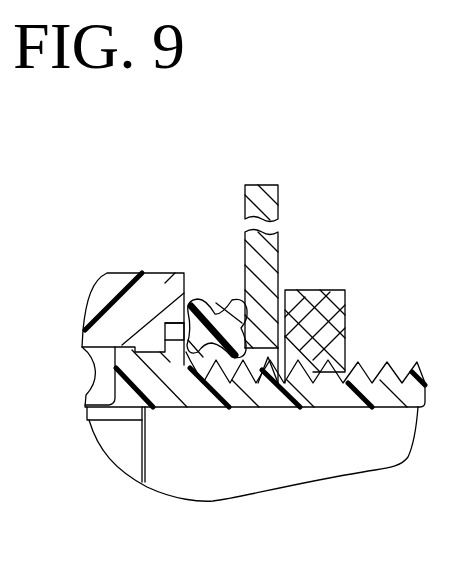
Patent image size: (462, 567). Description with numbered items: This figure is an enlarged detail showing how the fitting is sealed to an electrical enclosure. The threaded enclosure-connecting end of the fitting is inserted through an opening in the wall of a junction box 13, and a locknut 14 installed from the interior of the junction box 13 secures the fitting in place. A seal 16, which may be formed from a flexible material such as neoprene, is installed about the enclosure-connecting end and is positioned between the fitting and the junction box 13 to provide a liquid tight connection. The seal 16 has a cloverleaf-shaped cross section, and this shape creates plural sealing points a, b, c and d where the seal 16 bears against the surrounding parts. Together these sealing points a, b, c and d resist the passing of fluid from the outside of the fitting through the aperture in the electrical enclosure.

The junction box 13 is at (279, 200).
The locknut 14 is at (347, 314).
The seal 16 is at (210, 304).
The sealing point a is at (178, 358).
The sealing point b is at (249, 320).
The sealing point c is at (256, 404).
The sealing point d is at (160, 273).